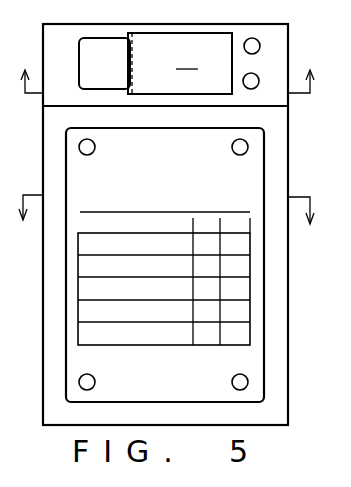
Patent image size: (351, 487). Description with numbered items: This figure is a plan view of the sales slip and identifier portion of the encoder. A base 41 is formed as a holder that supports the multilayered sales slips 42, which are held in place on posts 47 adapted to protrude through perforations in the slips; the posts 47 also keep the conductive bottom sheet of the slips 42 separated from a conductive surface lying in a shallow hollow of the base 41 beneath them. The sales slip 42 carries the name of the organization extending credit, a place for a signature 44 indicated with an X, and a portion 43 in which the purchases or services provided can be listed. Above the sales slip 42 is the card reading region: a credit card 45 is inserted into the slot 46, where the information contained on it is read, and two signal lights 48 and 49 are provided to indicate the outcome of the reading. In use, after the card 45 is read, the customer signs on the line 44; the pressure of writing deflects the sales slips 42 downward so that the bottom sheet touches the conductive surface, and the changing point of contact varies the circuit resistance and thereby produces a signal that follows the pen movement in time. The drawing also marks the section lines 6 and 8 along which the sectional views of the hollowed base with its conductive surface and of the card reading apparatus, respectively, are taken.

The base 41 is at (279, 357).
The sales slip 42 is at (77, 185).
The portion for listing purchases 43 is at (147, 338).
The signature line 44 is at (138, 212).
The credit card 45 is at (82, 57).
The slot 46 is at (133, 33).
The posts 47 is at (232, 147).
The signal light 48 is at (253, 43).
The signal light 49 is at (257, 80).
The section line 6- 6 is at (166, 221).
The section line 8- 8 is at (168, 70).